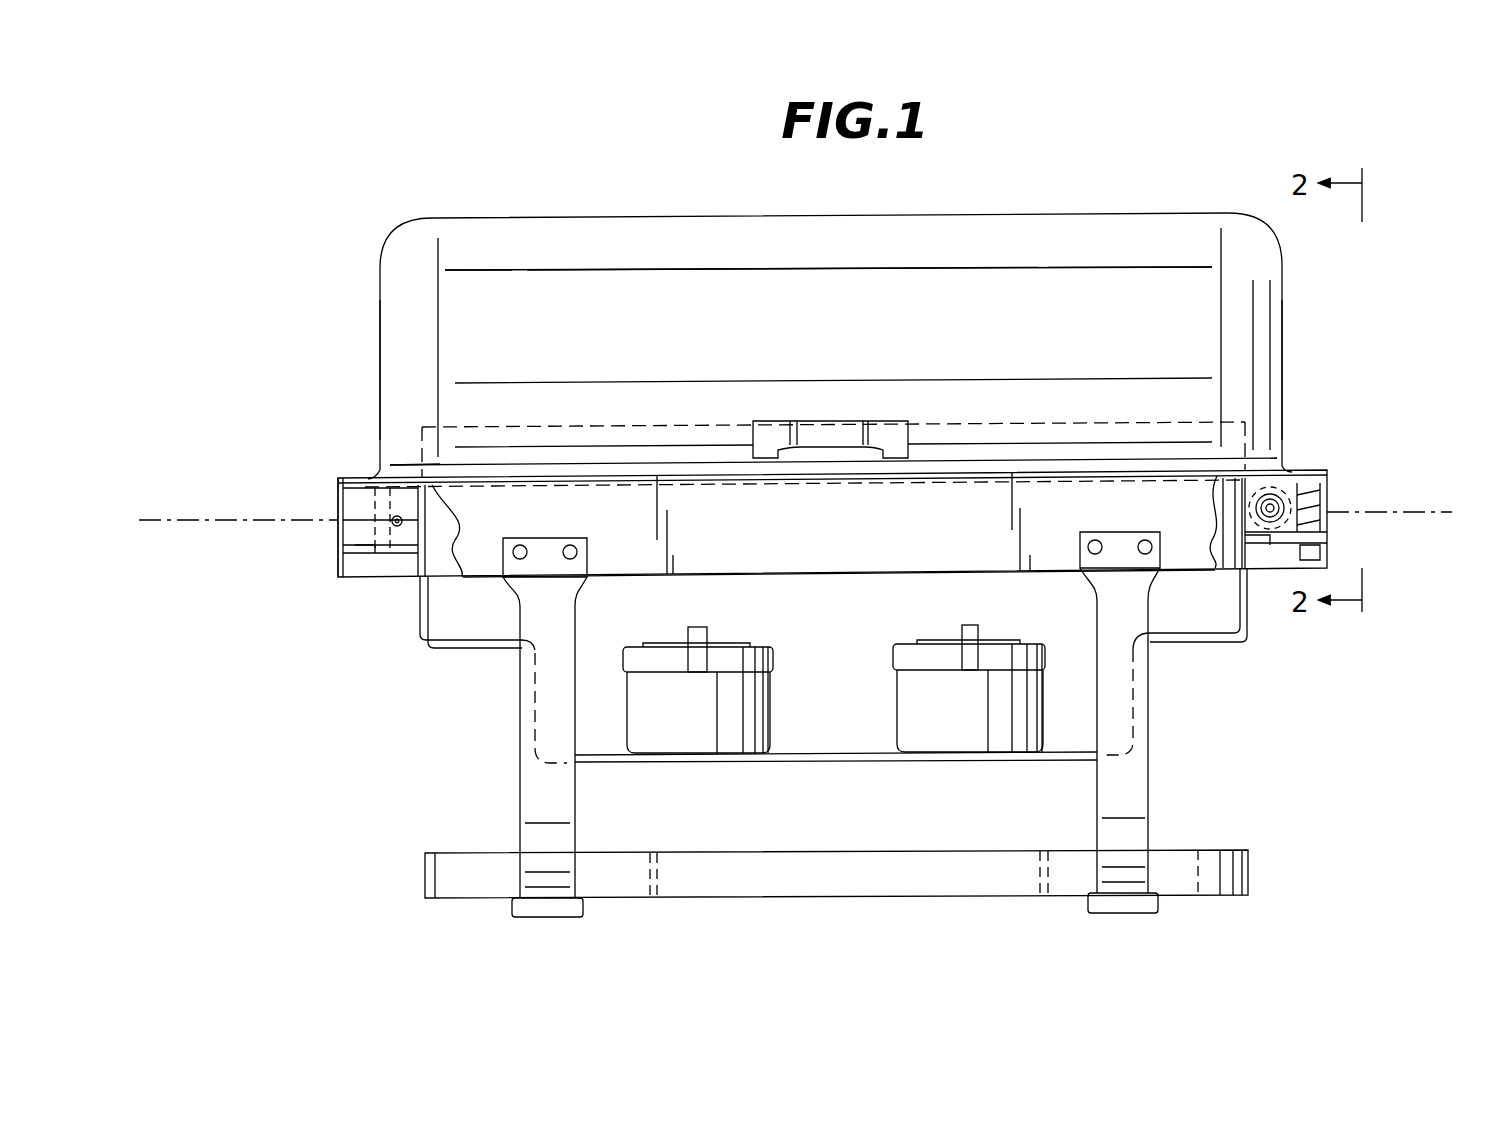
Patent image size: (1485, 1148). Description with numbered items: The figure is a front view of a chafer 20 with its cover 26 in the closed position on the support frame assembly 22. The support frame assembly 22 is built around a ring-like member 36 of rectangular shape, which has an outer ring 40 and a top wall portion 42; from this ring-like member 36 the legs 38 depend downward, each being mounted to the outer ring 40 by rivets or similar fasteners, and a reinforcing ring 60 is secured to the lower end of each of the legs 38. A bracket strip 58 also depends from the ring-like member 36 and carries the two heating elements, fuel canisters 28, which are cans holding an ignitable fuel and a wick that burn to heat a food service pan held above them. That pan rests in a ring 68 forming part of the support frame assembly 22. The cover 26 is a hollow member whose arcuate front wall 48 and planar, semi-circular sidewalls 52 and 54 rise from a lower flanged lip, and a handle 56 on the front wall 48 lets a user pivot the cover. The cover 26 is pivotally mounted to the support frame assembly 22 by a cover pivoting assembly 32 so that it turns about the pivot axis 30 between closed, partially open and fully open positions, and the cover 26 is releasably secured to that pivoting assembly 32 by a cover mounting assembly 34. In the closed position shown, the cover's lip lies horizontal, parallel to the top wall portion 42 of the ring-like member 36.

The chafer 20 is at (360, 226).
The support frame assembly 22 is at (334, 562).
The cover 26 is at (1234, 362).
The fuel canisters 28 is at (932, 727).
The pivot axis 30 is at (182, 517).
The cover pivoting assembly 32 is at (403, 556).
The cover mounting assembly 34 is at (358, 507).
The ring-like member 36 is at (832, 545).
The legs 38 is at (528, 780).
The outer ring 40 is at (337, 537).
The top wall portion 42 is at (403, 477).
The front wall 48 is at (806, 319).
The sidewall 52 is at (1283, 310).
The sidewall 54 is at (379, 318).
The handle 56 is at (850, 430).
The bracket strip 58 is at (607, 763).
The ring 60 is at (818, 887).
The ring 68 is at (470, 427).